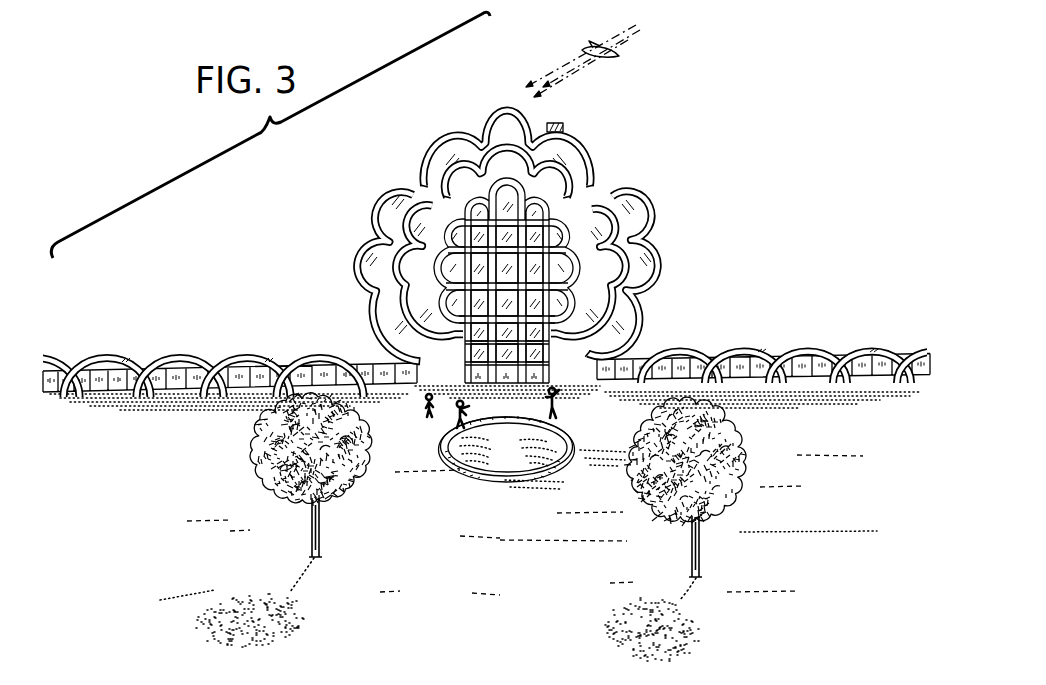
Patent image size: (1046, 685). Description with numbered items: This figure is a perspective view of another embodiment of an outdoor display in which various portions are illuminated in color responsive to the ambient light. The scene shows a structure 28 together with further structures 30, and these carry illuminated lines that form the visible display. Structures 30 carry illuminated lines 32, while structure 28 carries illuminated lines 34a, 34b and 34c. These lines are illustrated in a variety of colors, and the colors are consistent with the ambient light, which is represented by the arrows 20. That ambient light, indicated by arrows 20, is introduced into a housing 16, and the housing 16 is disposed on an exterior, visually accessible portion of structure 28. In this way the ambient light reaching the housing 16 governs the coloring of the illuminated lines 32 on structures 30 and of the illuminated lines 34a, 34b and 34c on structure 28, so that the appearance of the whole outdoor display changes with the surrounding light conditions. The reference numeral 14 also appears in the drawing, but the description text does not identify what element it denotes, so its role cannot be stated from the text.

The visitors near pool 14 is at (454, 424).
The housing 16 is at (568, 121).
The arrows 20 is at (620, 58).
The structure 28 is at (547, 239).
The structures 30 is at (186, 356).
The illuminated lines 32 is at (262, 357).
The illuminated line 34a is at (589, 153).
The illuminated line 34b is at (612, 220).
The illuminated line 34c is at (583, 272).